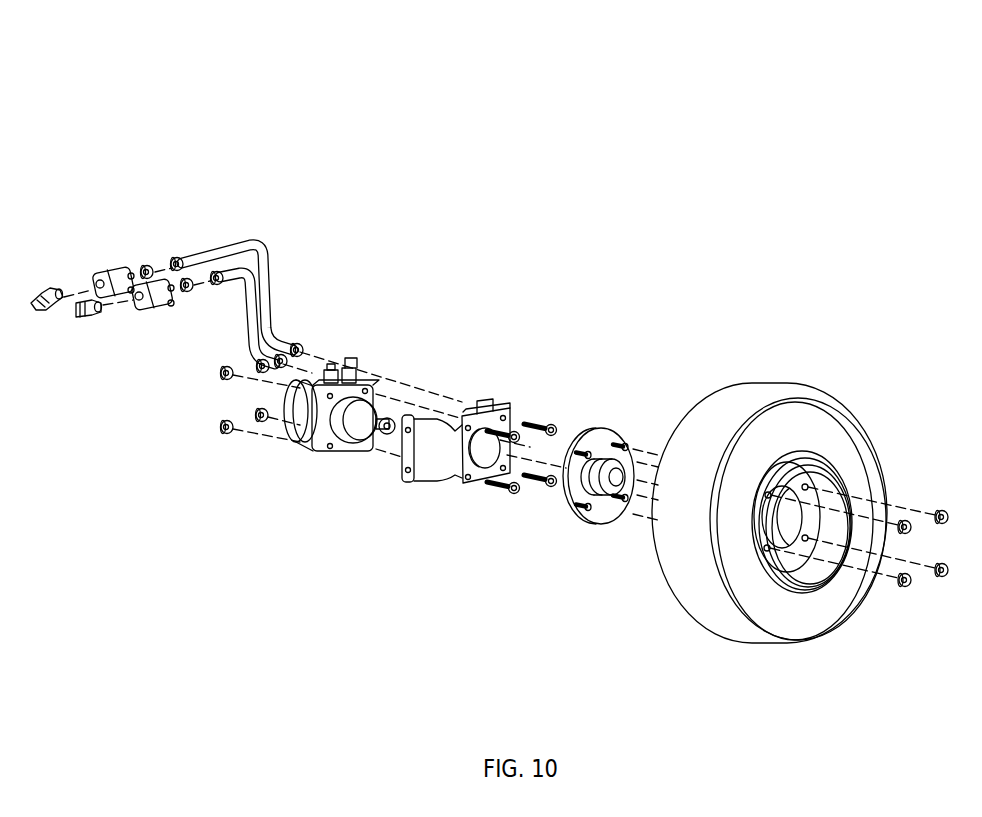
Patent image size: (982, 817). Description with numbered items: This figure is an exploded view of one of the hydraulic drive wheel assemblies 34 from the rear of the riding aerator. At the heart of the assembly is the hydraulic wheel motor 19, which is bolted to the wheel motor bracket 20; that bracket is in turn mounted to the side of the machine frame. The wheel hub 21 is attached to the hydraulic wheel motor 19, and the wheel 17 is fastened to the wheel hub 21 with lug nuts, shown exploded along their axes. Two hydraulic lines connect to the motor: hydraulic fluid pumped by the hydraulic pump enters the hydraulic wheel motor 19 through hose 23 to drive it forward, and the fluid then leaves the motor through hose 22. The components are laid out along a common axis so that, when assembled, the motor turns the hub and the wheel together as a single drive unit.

The hydraulic drive wheel assembly 34 is at (468, 187).
The wheel 17 is at (781, 357).
The hydraulic wheel motor 19 is at (301, 482).
The wheel motor bracket 20 is at (491, 372).
The wheel hub 21 is at (594, 403).
The hose 22 is at (292, 260).
The hose 23 is at (220, 325).